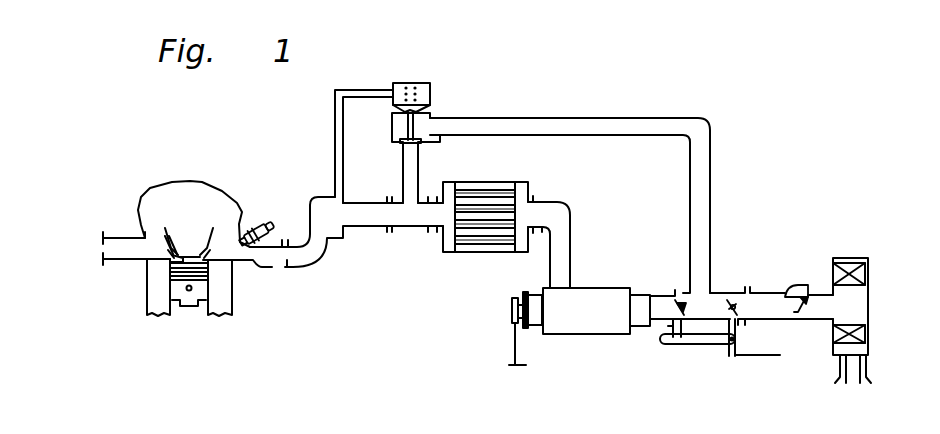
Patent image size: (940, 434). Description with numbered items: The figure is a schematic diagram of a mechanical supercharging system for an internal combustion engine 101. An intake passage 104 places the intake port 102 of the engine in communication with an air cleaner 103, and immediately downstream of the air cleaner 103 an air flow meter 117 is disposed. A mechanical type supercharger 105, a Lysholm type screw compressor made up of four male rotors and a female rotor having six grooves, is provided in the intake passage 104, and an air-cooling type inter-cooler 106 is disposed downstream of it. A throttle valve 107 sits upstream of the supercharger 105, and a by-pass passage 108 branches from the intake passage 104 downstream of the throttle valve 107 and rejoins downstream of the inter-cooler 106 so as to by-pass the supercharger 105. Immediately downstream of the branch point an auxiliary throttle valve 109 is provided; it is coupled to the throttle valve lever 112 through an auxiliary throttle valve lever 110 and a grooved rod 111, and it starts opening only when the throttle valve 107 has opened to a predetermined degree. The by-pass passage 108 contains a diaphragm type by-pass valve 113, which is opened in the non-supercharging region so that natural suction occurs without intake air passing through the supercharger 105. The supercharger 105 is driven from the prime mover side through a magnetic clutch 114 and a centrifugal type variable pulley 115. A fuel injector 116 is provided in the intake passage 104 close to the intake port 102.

The internal combustion engine 101 is at (161, 186).
The intake port 102 is at (215, 252).
The air cleaner 103 is at (853, 259).
The intake passage 104 is at (274, 262).
The mechanical type supercharger 105 is at (597, 332).
The inter-cooler 106 is at (463, 255).
The throttle valve 107 is at (733, 298).
The by-pass passage 108 is at (707, 152).
The auxiliary throttle valve 109 is at (682, 290).
The auxiliary throttle valve lever 110 is at (670, 332).
The grooved rod 111 is at (700, 344).
The throttle valve lever 112 is at (728, 362).
The by-pass valve 113 is at (437, 103).
The magnetic clutch 114 is at (533, 330).
The variable pulley 115 is at (512, 312).
The fuel injector 116 is at (252, 215).
The air flow meter 117 is at (799, 285).